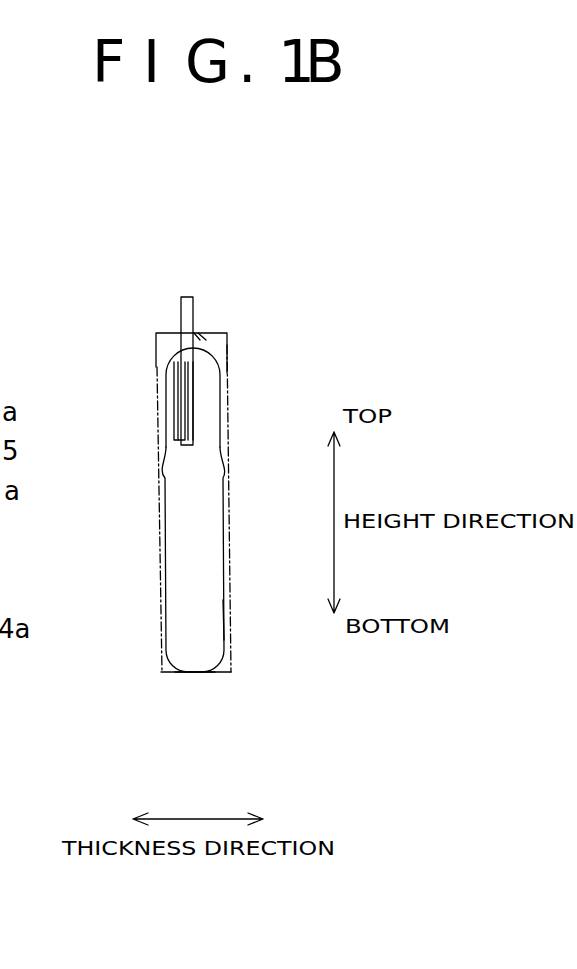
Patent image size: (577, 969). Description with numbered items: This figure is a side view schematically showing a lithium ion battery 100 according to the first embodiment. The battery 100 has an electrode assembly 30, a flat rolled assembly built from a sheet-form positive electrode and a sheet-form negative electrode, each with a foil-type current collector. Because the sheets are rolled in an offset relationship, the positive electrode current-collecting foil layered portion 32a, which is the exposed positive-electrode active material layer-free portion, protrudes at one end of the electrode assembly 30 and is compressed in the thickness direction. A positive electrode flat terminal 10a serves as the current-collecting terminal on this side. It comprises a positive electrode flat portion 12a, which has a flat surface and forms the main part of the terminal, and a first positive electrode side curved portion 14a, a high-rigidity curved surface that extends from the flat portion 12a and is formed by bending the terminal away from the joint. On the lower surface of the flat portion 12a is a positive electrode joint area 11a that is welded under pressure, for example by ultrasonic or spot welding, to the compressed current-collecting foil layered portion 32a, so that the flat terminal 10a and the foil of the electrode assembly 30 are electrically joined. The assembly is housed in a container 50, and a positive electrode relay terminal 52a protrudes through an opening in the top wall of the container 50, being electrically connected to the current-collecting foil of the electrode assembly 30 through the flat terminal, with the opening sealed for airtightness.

The lithium ion battery 100 is at (275, 247).
The electrode assembly 30 is at (204, 361).
The positive electrode relay terminal 52a is at (184, 296).
The first positive electrode side curved portion 14a is at (176, 390).
The positive electrode flat portion 12a is at (188, 402).
The positive electrode joint area 11a is at (195, 423).
The positive electrode flat terminal 10a is at (206, 345).
The positive electrode current-collecting foil layered portion 32a is at (212, 620).
The container 50 is at (218, 677).